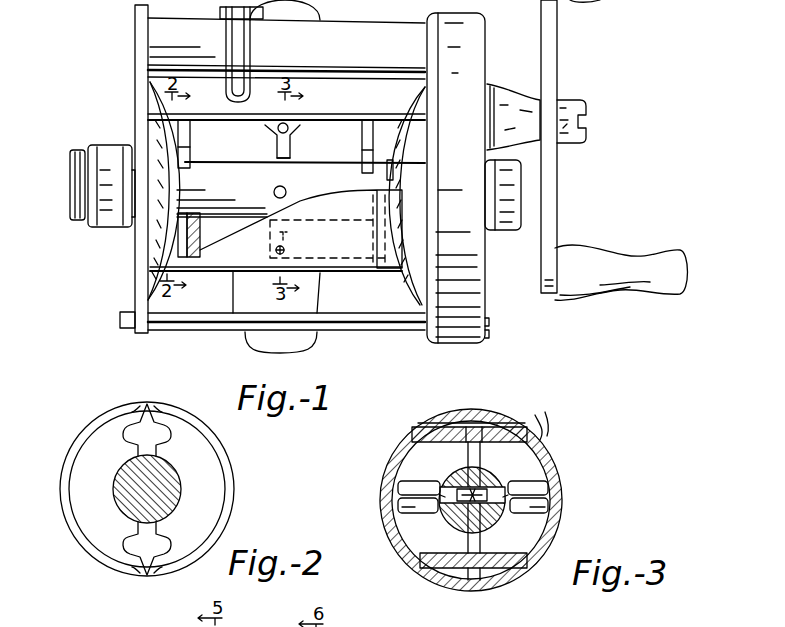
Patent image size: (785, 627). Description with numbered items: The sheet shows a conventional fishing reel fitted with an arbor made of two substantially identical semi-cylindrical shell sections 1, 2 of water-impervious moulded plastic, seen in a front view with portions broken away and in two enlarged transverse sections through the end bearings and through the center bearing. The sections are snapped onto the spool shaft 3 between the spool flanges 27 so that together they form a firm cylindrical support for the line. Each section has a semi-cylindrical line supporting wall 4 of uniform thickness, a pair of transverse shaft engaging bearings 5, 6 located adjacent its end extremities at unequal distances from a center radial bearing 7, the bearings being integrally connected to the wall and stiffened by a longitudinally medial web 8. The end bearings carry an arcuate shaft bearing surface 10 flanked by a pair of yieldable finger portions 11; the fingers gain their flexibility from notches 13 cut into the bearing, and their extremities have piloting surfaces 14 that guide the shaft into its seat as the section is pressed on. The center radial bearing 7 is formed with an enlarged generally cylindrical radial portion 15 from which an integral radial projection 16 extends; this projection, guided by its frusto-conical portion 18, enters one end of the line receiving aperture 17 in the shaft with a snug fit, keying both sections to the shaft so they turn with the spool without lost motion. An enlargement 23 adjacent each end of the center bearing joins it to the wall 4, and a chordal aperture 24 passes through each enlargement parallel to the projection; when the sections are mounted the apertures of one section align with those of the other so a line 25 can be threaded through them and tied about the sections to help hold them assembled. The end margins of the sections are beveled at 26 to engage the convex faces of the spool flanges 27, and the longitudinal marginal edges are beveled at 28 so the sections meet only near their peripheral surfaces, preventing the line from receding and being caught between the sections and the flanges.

In FIG. 1, the arbor section 1 is at (346, 114).
In FIG. 2, the arbor section 1 is at (85, 427).
In FIG. 1, the arbor section 2 is at (343, 283).
In FIG. 2, the arbor section 2 is at (215, 439).
In FIG. 1, the shaft 3 is at (301, 215).
In FIG. 2, the shaft 3 is at (126, 480).
In FIG. 3, the shaft 3 is at (460, 470).
In FIG. 1, the line supporting wall 4 is at (206, 100).
In FIG. 2, the line supporting wall 4 is at (60, 484).
In FIG. 3, the line supporting wall 4 is at (382, 470).
In FIG. 1, the shaft engaging bearing 5 is at (190, 134).
In FIG. 2, the shaft engaging bearing 5 is at (93, 503).
In FIG. 1, the shaft engaging bearing 6 is at (362, 141).
In FIG. 2, the shaft engaging bearing 6 is at (200, 515).
In FIG. 1, the center radial bearing 7 is at (288, 157).
In FIG. 3, the center radial bearing 7 is at (400, 448).
In FIG. 3, the longitudinally medial web 8 is at (425, 508).
In FIG. 2, the arcuate shaft bearing surface 10 is at (176, 482).
In FIG. 2, the finger portion 11 is at (138, 449).
In FIG. 2, the notch 13 is at (147, 489).
In FIG. 2, the piloting surface 14 is at (164, 452).
In FIG. 3, the cylindrical radial portion 15 is at (432, 488).
In FIG. 3, the radial projection 16 is at (444, 514).
In FIG. 1, the line receiving aperture 17 is at (286, 190).
In FIG. 3, the line receiving aperture 17 is at (480, 477).
In FIG. 3, the frusto-conical portion 18 is at (462, 525).
In FIG. 1, the enlargement 23 is at (272, 136).
In FIG. 3, the enlargement 23 is at (452, 426).
In FIG. 1, the aperture 24 is at (288, 125).
In FIG. 3, the aperture 24 is at (444, 409).
In FIG. 3, the line 25 is at (561, 487).
In FIG. 2, the bevel 26 is at (230, 474).
In FIG. 1, the spool flange 27 is at (286, 193).
In FIG. 2, the bevel 28 is at (142, 405).
In FIG. 3, the bevel 28 is at (477, 588).